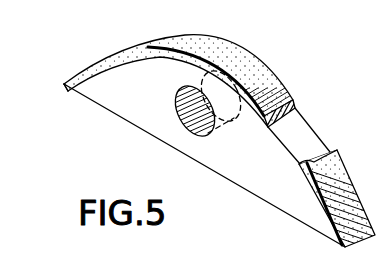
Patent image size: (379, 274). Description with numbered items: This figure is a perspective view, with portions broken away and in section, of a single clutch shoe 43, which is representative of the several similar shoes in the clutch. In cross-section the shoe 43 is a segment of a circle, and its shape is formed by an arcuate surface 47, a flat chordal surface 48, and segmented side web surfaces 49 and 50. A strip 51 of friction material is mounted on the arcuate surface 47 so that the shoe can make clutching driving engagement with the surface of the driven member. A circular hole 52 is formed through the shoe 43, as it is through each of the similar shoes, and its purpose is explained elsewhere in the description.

The clutch shoe 43 is at (105, 108).
The arcuate surface 47 is at (293, 137).
The flat chordal surface 48 is at (268, 204).
The segmented side web surface 49 is at (143, 98).
The segmented side web surface 50 is at (305, 118).
The strip of friction material 51 is at (192, 37).
The circular hole 52 is at (200, 118).